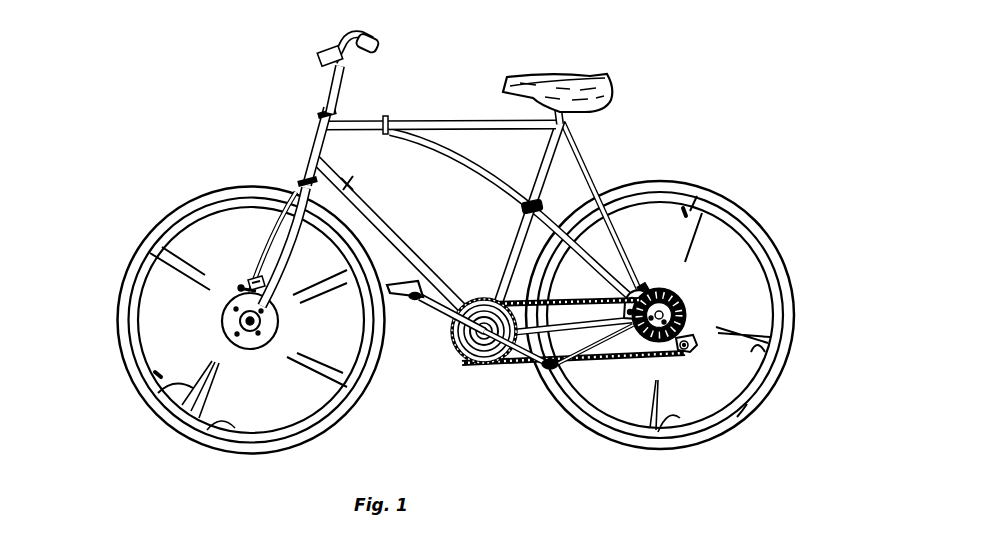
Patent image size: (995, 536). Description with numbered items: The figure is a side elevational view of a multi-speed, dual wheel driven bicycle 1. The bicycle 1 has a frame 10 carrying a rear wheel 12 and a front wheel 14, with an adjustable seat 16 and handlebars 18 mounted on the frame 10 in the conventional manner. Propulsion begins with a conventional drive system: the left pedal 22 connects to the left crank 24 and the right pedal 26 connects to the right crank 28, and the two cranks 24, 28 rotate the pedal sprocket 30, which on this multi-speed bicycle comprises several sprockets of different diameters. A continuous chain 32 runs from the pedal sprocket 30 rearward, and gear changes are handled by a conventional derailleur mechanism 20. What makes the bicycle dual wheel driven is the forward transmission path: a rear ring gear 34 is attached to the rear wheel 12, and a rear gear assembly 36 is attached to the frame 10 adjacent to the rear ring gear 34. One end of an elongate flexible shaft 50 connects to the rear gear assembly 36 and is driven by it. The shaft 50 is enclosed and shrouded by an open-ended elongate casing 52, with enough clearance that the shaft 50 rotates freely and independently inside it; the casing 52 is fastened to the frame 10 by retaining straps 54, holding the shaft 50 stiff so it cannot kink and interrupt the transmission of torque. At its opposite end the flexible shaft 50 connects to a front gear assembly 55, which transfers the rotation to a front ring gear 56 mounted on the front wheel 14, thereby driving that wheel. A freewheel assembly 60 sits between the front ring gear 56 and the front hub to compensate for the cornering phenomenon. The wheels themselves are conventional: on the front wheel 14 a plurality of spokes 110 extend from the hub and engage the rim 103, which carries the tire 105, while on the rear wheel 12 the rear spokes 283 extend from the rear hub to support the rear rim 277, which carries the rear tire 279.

The multi-speed dual wheel driven bicycle 1 is at (683, 59).
The frame 10 is at (456, 120).
The rear wheel 12 is at (793, 297).
The front wheel 14 is at (117, 330).
The adjustable seat 16 is at (572, 80).
The handlebars 18 is at (338, 42).
The derailleur mechanism 20 is at (688, 352).
The left pedal 22 is at (528, 364).
The left crank 24 is at (497, 364).
The right pedal 26 is at (396, 300).
The right crank 28 is at (432, 318).
The pedal sprocket 30 is at (468, 362).
The continuous chain 32 is at (620, 360).
The rear ring gear 34 is at (683, 305).
The rear gear assembly 36 is at (650, 290).
The elongate flexible shaft 50 is at (255, 278).
The elongate casing 52 is at (460, 152).
The retaining straps 54 is at (386, 117).
The front gear assembly 55 is at (238, 286).
The front ring gear 56 is at (222, 322).
The freewheel assembly 60 is at (251, 331).
The rim 103 is at (218, 426).
The tire 105 is at (246, 186).
The spokes 110 is at (180, 390).
The rear rim 277 is at (764, 356).
The rear tire 279 is at (748, 409).
The rear spokes 283 is at (672, 420).